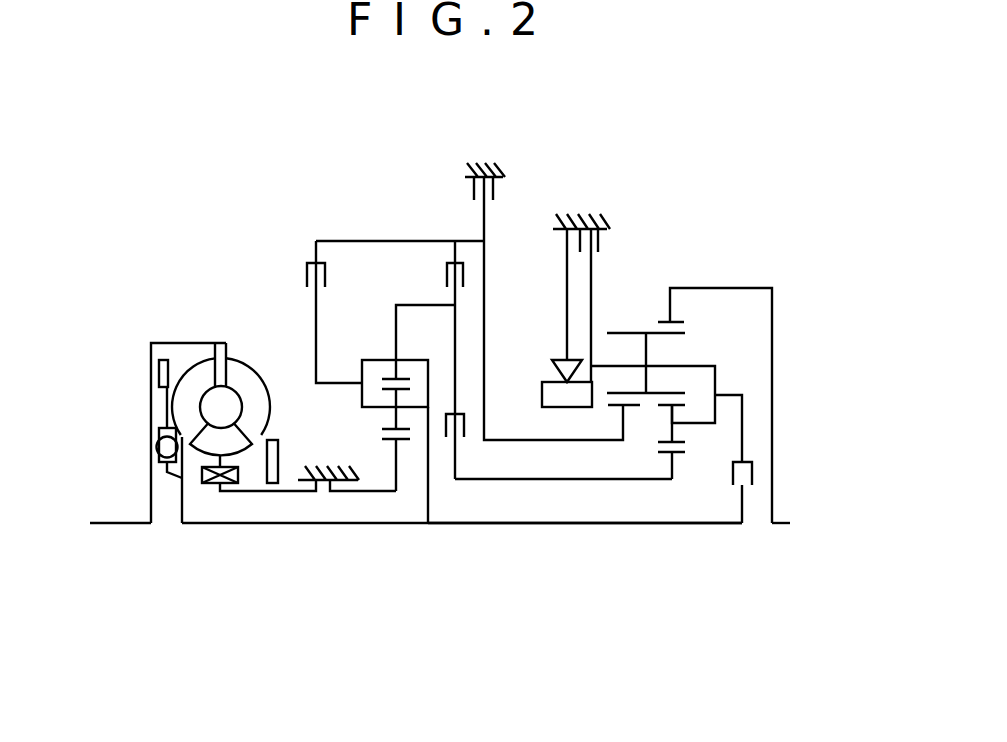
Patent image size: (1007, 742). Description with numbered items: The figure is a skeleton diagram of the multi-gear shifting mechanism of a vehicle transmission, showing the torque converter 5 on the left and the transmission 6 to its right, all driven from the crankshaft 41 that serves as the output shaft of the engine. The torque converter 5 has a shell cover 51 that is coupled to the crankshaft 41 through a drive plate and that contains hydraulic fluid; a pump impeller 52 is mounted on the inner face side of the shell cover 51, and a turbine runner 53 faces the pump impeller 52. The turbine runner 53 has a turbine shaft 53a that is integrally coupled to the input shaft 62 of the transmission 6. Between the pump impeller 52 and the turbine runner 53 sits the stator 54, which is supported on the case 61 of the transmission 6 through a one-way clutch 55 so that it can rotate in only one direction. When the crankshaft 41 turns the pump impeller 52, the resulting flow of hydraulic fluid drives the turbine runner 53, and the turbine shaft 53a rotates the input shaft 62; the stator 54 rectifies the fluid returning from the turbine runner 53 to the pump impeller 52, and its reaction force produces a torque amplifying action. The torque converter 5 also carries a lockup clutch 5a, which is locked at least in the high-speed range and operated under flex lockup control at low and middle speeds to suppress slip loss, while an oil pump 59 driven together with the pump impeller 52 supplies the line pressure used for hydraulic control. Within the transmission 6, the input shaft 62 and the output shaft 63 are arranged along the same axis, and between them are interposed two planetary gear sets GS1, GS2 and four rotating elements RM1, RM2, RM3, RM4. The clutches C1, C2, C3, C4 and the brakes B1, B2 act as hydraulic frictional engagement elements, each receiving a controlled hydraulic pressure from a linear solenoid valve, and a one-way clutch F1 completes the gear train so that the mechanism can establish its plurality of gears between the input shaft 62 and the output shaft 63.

The torque converter 5 is at (175, 319).
The lockup clutch 5a is at (160, 371).
The transmission 6 is at (392, 163).
The crankshaft 41 is at (110, 523).
The shell cover 51 is at (203, 342).
The pump impeller 52 is at (240, 370).
The turbine runner 53 is at (188, 375).
The turbine shaft 53a is at (197, 523).
The stator 54 is at (218, 433).
The one-way clutch 55 is at (212, 484).
The oil pump 59 is at (272, 484).
The case 61 is at (325, 466).
The input shaft 62 is at (268, 523).
The output shaft 63 is at (790, 525).
The first rotating element RM1 is at (392, 241).
The second rotating element RM2 is at (562, 527).
The third rotating element RM3 is at (717, 378).
The fourth rotating element RM4 is at (712, 287).
The first planetary gear set GS1 is at (355, 343).
The second planetary gear set GS2 is at (637, 318).
The first clutch C1 is at (466, 420).
The second clutch C2 is at (733, 470).
The third clutch C3 is at (447, 278).
The fourth clutch C4 is at (308, 274).
The first brake B1 is at (494, 194).
The second brake B2 is at (599, 238).
The one-way clutch F1 is at (560, 357).